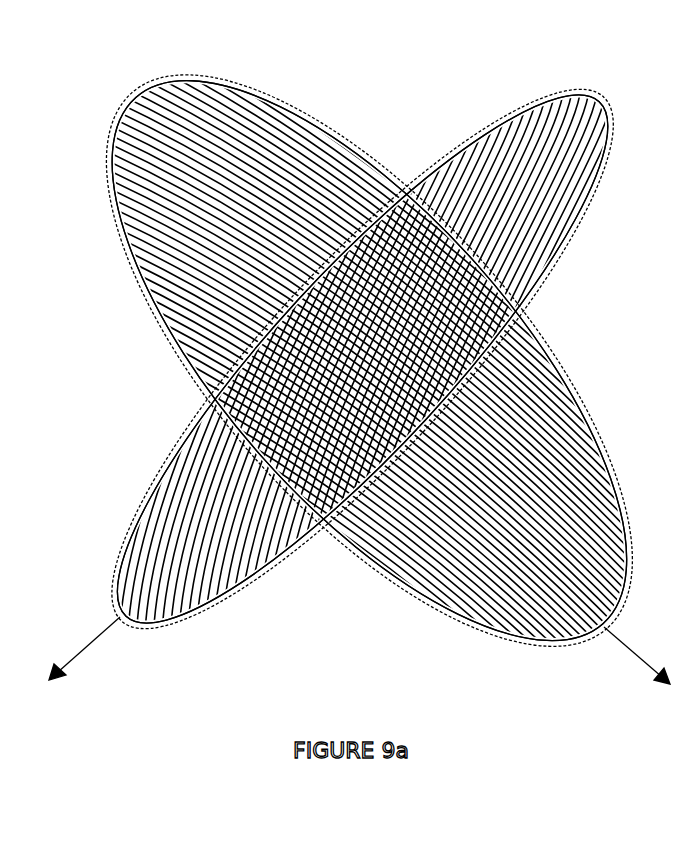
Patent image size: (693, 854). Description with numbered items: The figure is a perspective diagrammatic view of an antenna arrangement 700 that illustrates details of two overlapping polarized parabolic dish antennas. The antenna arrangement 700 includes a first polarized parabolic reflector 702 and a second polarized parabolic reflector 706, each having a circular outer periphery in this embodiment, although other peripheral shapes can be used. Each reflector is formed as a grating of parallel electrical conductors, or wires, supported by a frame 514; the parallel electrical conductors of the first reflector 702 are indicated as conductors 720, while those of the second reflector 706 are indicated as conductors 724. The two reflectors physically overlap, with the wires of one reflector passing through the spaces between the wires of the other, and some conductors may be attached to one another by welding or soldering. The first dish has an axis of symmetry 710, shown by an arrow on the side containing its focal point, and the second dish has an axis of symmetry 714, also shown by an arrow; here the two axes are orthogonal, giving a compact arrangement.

The antenna arrangement 700 is at (356, 397).
The first polarized parabolic reflector 702 is at (273, 104).
The second polarized parabolic reflector 706 is at (606, 104).
The parallel electrical conductors of first reflector 720 is at (120, 178).
The parallel electrical conductors of second reflector 724 is at (553, 230).
The frame 514 is at (190, 440).
The axis of symmetry 710 is at (100, 666).
The axis of symmetry 714 is at (608, 668).